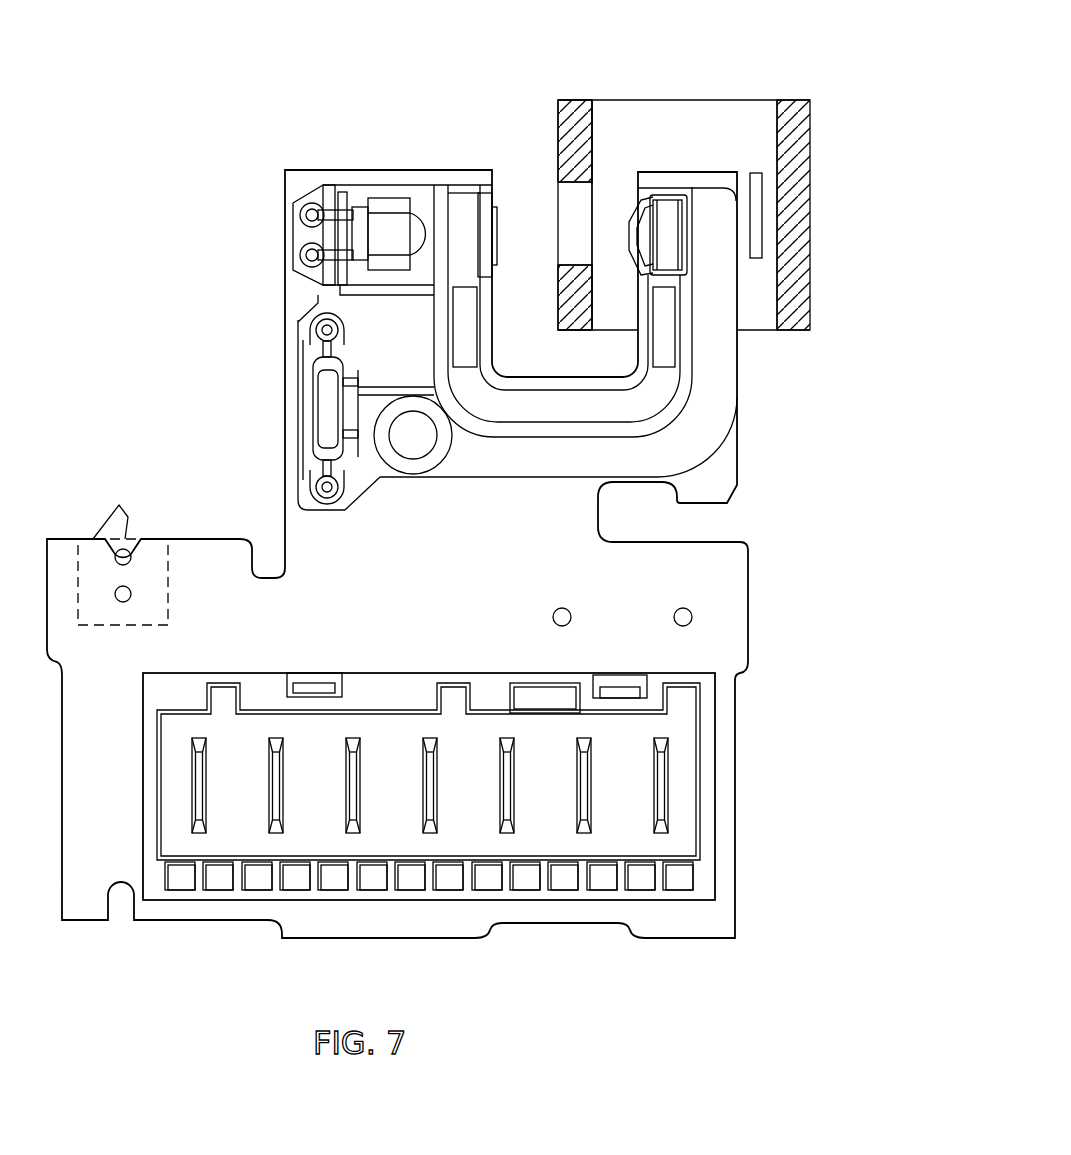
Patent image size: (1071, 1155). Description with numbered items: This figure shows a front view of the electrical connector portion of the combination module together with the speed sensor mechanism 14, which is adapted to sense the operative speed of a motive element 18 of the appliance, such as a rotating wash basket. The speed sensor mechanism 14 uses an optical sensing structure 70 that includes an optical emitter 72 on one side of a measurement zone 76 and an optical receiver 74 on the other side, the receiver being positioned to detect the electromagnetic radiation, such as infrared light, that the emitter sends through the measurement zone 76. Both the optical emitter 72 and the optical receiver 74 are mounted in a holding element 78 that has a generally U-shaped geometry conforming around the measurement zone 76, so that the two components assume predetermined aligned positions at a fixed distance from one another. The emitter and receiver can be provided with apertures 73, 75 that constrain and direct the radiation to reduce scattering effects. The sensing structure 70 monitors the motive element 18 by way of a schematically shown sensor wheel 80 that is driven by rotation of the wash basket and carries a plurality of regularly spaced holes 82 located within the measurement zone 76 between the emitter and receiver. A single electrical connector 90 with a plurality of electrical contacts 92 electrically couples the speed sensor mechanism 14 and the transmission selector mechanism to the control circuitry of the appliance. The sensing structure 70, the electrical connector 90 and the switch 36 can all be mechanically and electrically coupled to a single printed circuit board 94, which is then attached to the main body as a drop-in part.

The speed sensor mechanism 14 is at (236, 211).
The motive element 18 is at (724, 91).
The switch 36 is at (109, 521).
The sensing structure 70 is at (537, 127).
The optical emitter 72 is at (398, 228).
The aperture 73 is at (501, 264).
The optical receiver 74 is at (663, 208).
The aperture 75 is at (627, 267).
The measurement zone 76 is at (526, 180).
The holding element 78 is at (434, 312).
The sensor wheel 80 is at (627, 108).
The holes 82 is at (587, 203).
The electrical connector 90 is at (703, 783).
The electrical contacts 92 is at (694, 945).
The printed circuit board 94 is at (361, 618).